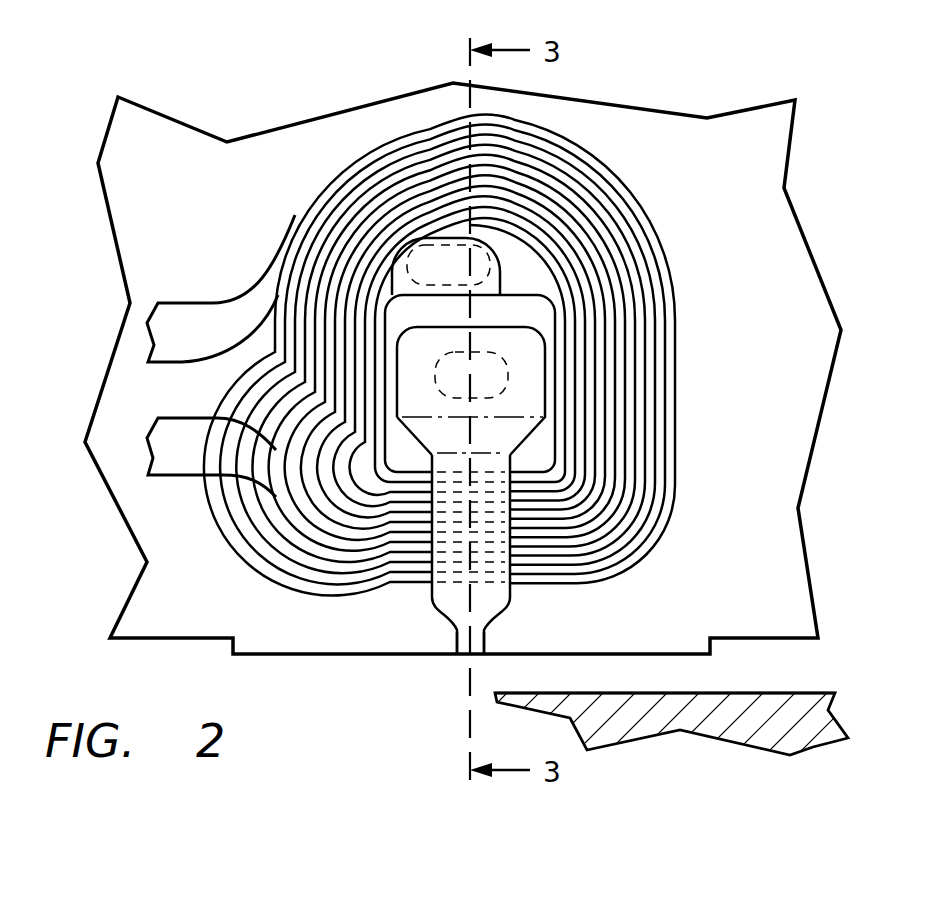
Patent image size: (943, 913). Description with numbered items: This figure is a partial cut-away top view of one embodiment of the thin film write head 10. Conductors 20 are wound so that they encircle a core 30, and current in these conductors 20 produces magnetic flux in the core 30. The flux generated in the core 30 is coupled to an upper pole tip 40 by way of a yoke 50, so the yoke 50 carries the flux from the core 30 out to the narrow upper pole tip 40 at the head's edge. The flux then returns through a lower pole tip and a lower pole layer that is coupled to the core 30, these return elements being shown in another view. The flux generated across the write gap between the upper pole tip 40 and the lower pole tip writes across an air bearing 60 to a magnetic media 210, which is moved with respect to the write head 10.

The thin film write head 10 is at (643, 176).
The conductors 20 is at (300, 245).
The core 30 is at (482, 372).
The upper pole tip 40 is at (487, 652).
The yoke 50 is at (462, 606).
The air bearing 60 is at (556, 665).
The magnetic media 210 is at (800, 707).